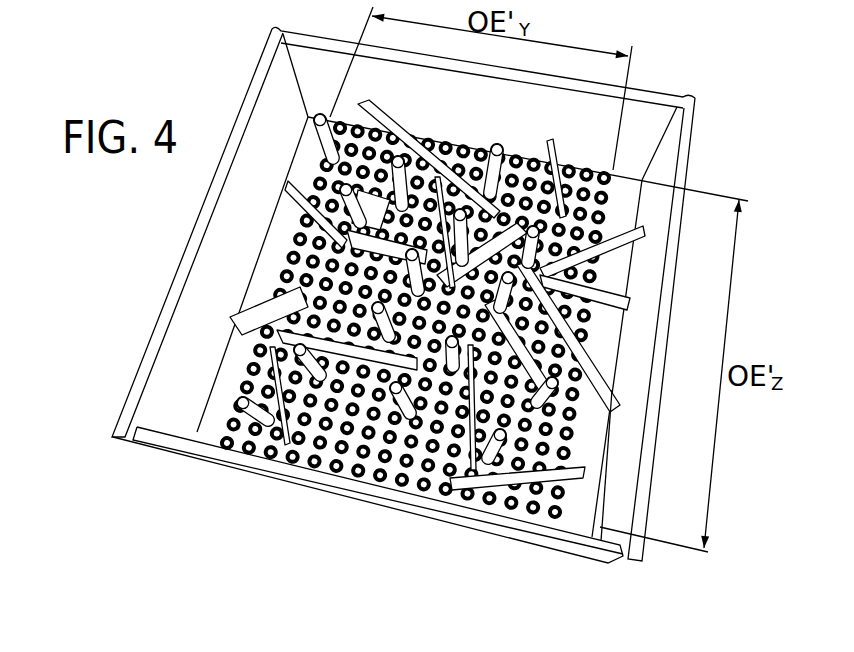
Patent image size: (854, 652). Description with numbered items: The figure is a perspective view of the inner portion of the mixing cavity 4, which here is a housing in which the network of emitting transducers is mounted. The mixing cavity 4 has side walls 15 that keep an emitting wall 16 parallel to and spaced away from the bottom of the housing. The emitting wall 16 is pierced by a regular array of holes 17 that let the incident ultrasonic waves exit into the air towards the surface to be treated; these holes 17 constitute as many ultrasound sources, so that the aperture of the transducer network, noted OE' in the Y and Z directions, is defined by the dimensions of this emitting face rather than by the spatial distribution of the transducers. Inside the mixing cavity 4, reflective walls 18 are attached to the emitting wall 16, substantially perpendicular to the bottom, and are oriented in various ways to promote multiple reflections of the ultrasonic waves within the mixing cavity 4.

The mixing cavity 4 is at (699, 160).
The side walls 15 is at (638, 130).
The emitting wall 16 is at (527, 500).
The holes 17 is at (349, 475).
The reflective walls 18 is at (262, 372).